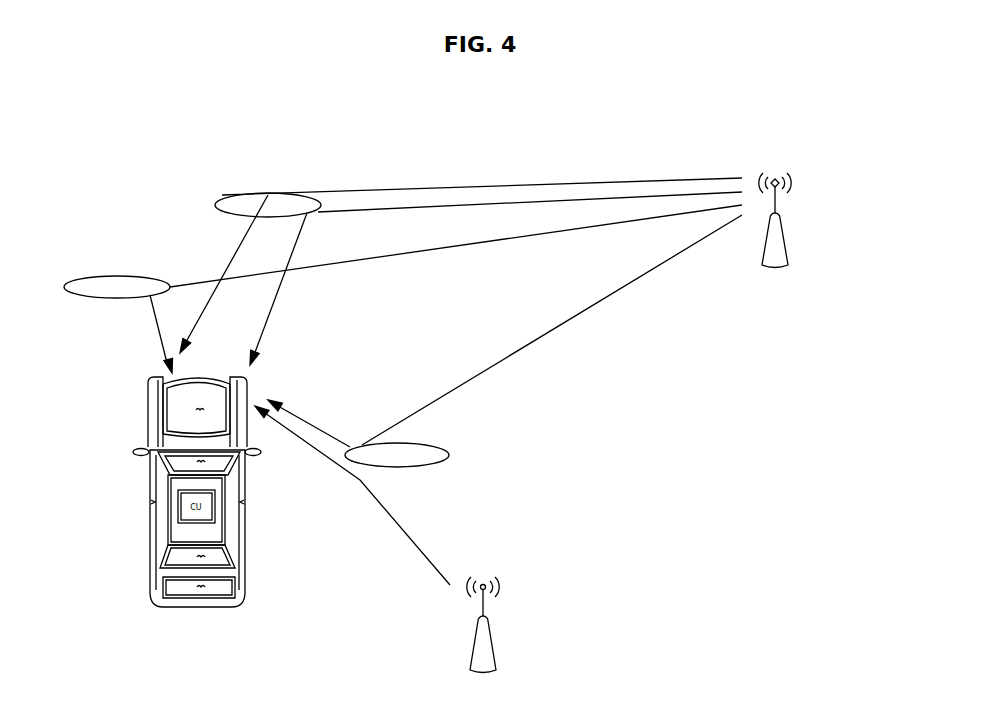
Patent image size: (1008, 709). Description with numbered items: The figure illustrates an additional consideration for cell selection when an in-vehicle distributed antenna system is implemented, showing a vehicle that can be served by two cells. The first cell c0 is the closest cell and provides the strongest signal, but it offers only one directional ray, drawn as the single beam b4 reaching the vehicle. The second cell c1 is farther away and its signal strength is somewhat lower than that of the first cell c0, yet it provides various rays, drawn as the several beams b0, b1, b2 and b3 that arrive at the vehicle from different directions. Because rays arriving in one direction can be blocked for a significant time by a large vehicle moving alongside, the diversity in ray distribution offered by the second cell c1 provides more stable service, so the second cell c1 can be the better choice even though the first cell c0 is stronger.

The beam b0 from base station c1 b0 is at (118, 324).
The beam b1 from base station c1 b1 is at (250, 273).
The beam b2 from base station c1 b2 is at (278, 289).
The beam b3 from base station c1 b3 is at (358, 421).
The beam b4 from base station c0 b4 is at (353, 495).
The first cell c0 is at (630, 626).
The second cell c1 is at (524, 309).